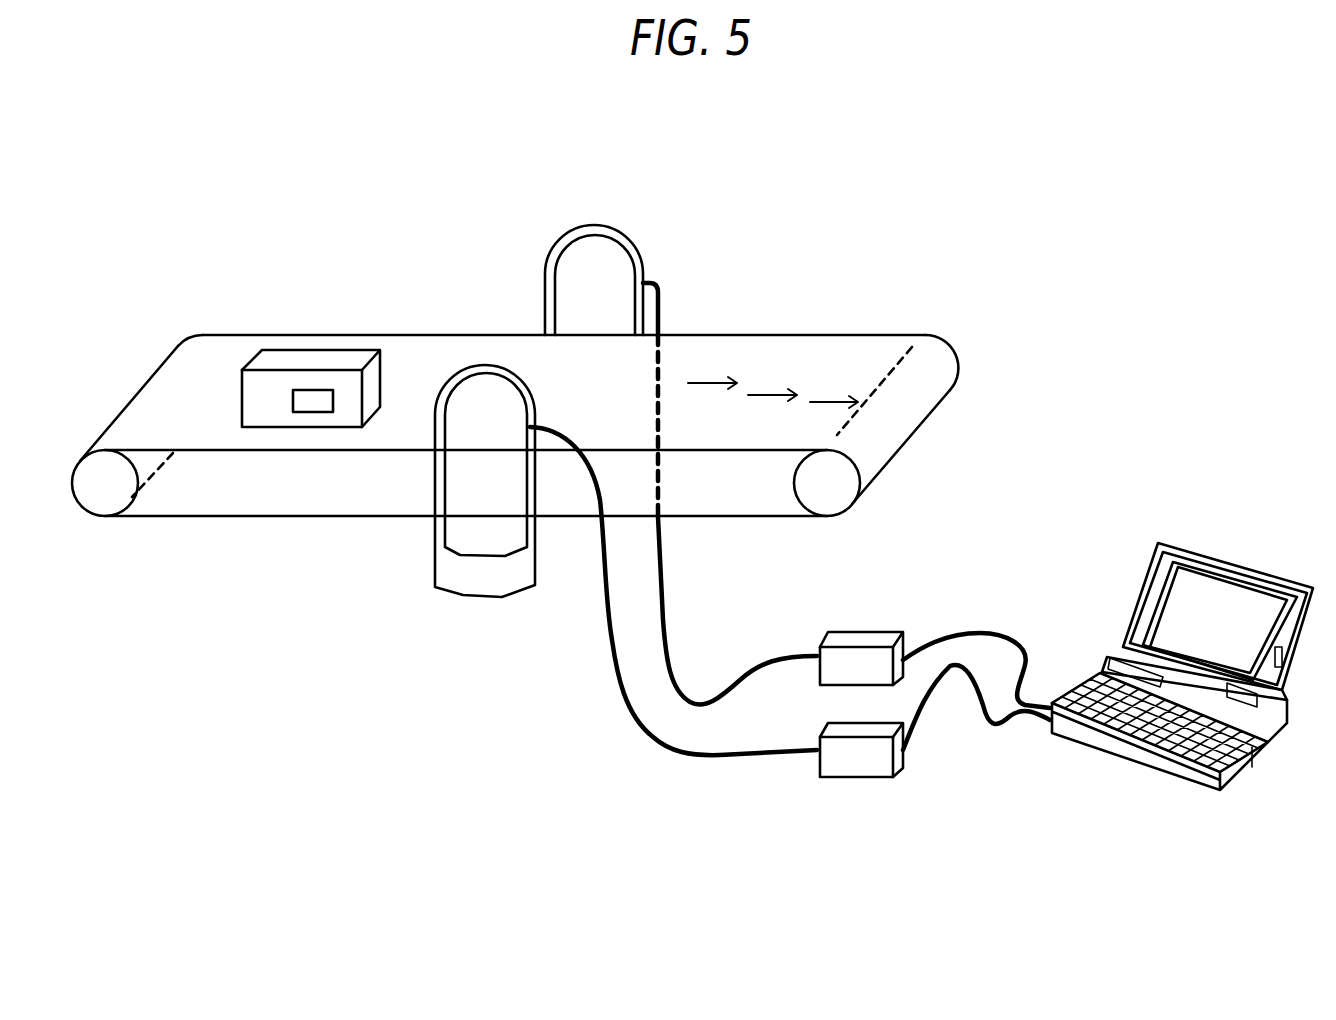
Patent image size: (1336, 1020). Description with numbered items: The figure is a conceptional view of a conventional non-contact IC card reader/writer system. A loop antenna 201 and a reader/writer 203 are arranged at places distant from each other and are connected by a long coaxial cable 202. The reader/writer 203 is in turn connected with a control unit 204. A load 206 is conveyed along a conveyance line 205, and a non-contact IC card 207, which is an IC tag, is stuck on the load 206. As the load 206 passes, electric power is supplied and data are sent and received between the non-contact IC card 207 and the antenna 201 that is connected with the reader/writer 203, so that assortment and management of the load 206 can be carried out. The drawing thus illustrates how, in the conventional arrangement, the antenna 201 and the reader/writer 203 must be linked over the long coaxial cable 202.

The antenna 201 is at (625, 235).
The coaxial cable 202 is at (607, 613).
The reader/writer 203 is at (837, 677).
The control unit 204 is at (1138, 597).
The conveyance line 205 is at (747, 333).
The load 206 is at (280, 388).
The non-contact IC card 207 is at (308, 402).